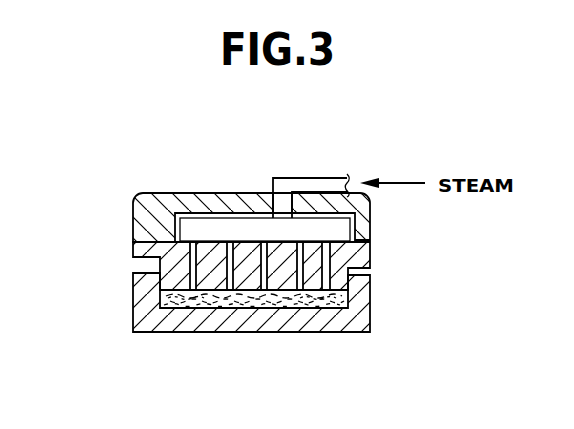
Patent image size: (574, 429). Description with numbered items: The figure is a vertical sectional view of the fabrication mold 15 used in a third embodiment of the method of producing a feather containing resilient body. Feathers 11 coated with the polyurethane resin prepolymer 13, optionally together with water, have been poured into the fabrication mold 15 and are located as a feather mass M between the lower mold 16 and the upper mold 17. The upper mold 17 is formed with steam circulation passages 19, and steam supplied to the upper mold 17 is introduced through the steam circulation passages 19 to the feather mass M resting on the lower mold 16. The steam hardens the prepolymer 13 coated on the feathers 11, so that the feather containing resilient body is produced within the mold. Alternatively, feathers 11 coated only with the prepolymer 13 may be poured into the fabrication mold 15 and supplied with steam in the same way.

The feathers 11 is at (192, 296).
The prepolymer 13 is at (316, 296).
The fabrication mold 15 is at (382, 251).
The lower mold 16 is at (365, 312).
The upper mold 17 is at (365, 228).
The steam circulation passages 19 is at (305, 178).
The feather mass M is at (372, 293).